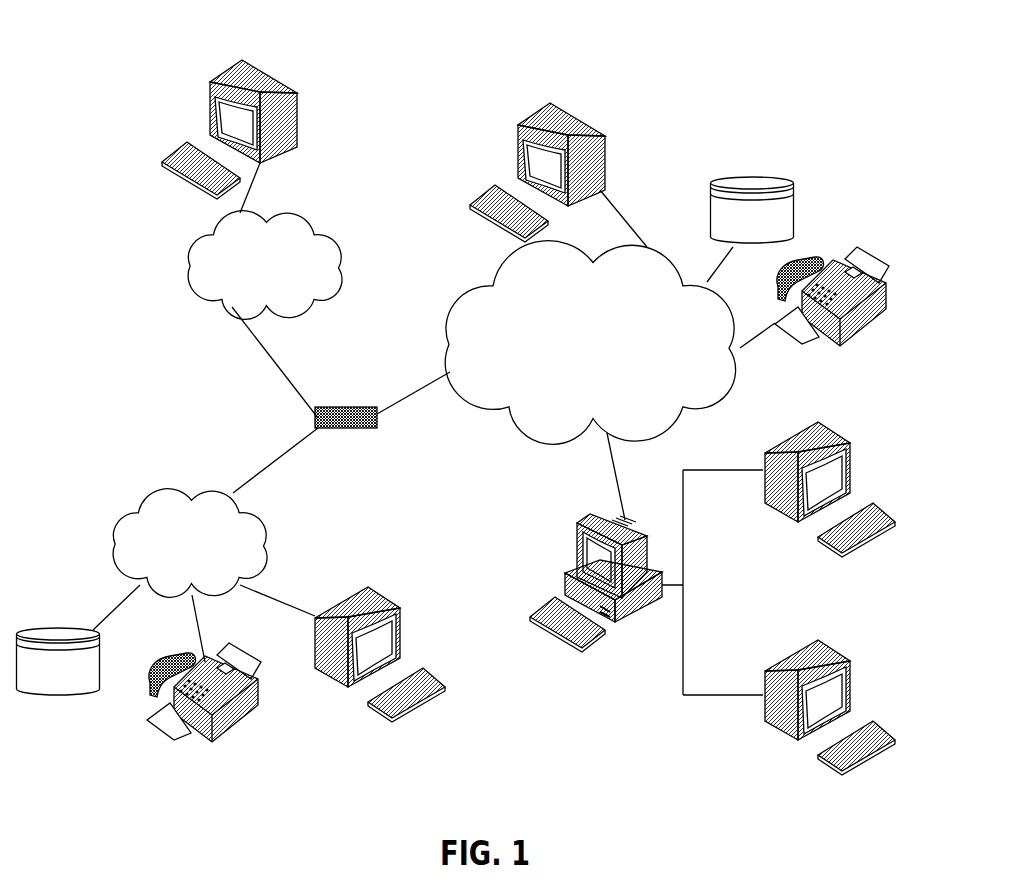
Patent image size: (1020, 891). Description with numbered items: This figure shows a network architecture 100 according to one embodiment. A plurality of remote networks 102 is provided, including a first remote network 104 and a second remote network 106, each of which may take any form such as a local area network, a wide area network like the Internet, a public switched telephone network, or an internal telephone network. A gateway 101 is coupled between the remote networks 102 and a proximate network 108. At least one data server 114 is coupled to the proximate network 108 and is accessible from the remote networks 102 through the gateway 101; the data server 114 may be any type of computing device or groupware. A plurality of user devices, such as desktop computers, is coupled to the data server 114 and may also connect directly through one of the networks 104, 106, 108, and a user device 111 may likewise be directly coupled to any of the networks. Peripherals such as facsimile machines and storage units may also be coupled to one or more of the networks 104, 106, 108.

The architecture 100 is at (140, 45).
The gateway 101 is at (327, 406).
The remote networks 102 is at (168, 327).
The first remote network 104 is at (117, 513).
The second remote network 106 is at (337, 234).
The proximate network 108 is at (697, 403).
The user device 111 is at (605, 142).
The data server 114 is at (577, 540).